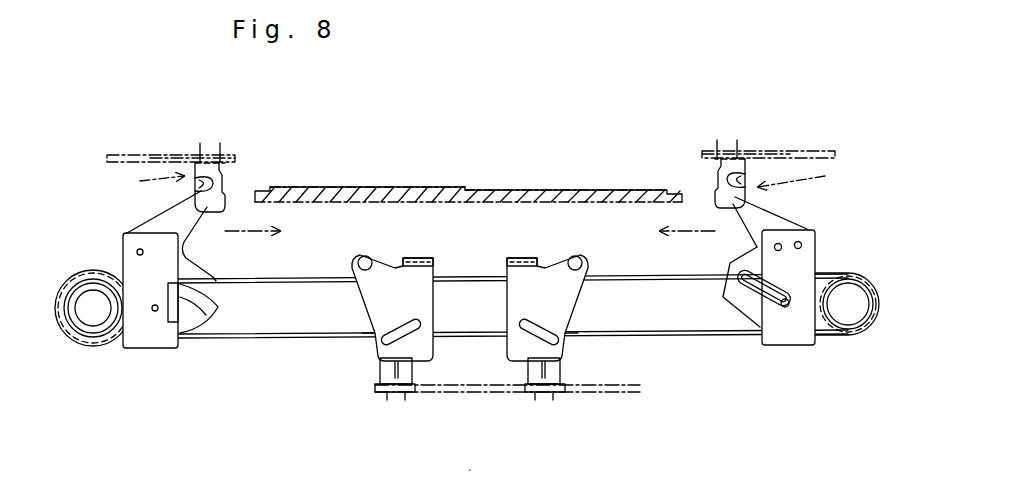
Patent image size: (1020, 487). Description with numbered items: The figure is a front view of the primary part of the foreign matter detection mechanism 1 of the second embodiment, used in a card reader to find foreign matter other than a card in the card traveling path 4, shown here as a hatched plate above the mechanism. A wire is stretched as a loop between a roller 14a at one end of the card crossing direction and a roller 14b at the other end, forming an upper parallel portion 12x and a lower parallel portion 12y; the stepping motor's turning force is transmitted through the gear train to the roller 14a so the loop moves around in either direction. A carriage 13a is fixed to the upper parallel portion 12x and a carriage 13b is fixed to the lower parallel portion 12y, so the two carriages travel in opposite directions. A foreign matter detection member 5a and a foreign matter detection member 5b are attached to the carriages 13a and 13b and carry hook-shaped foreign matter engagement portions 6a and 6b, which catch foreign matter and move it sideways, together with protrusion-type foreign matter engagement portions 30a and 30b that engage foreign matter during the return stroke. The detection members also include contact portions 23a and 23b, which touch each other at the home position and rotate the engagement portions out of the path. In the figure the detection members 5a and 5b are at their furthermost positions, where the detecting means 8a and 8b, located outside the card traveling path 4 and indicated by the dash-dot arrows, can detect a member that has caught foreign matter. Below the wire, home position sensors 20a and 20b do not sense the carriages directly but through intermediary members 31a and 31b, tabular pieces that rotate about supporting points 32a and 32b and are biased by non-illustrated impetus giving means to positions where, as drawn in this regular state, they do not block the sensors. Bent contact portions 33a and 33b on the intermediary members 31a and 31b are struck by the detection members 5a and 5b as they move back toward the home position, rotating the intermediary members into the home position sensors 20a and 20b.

The foreign matter detection mechanism 1 is at (156, 131).
The card traveling path 4 is at (342, 187).
The foreign matter detection member 5a is at (161, 212).
The foreign matter detection member 5b is at (786, 212).
The foreign matter engagement portion 6a is at (197, 187).
The foreign matter engagement portion 6b is at (739, 176).
The detecting means 8a is at (146, 184).
The detecting means 8b is at (808, 179).
The upper parallel portion 12x is at (230, 278).
The lower parallel portion 12y is at (315, 338).
The carriage 13a is at (152, 350).
The carriage 13b is at (787, 346).
The roller 14a is at (92, 360).
The roller 14b is at (851, 348).
The home position sensor 20a is at (560, 374).
The home position sensor 20b is at (380, 374).
The contact portion 23a is at (215, 282).
The contact portion 23b is at (724, 297).
The foreign matter engagement portion 30a is at (228, 184).
The foreign matter engagement portion 30b is at (709, 178).
The intermediary member 31a is at (585, 302).
The intermediary member 31b is at (357, 302).
The supporting point 32a is at (581, 256).
The supporting point 32b is at (359, 256).
The contact portion 33a is at (522, 257).
The contact portion 33b is at (418, 257).